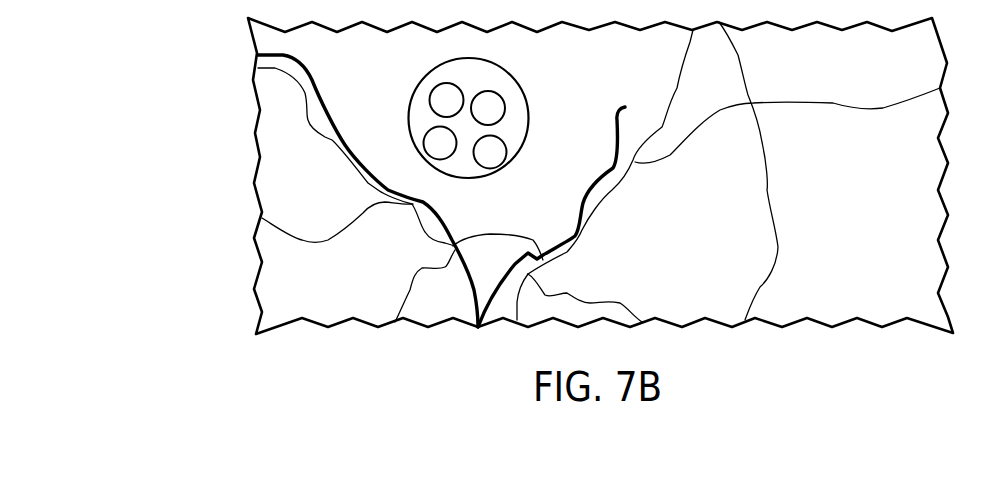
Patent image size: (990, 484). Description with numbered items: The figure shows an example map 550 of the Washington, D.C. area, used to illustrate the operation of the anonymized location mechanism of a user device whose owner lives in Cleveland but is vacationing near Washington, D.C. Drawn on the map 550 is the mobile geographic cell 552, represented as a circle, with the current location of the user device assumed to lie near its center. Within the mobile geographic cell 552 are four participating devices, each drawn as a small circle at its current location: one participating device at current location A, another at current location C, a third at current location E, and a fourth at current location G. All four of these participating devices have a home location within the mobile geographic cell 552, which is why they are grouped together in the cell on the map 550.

The example map 550 is at (190, 58).
The mobile geographic cell 552 is at (426, 118).
The current location A is at (447, 100).
The current location C is at (488, 108).
The current location E is at (440, 143).
The current location G is at (490, 152).